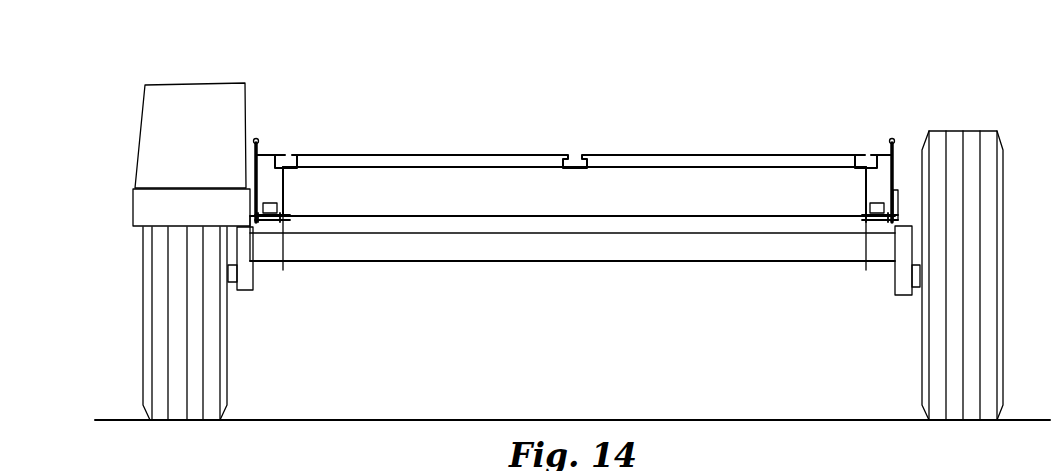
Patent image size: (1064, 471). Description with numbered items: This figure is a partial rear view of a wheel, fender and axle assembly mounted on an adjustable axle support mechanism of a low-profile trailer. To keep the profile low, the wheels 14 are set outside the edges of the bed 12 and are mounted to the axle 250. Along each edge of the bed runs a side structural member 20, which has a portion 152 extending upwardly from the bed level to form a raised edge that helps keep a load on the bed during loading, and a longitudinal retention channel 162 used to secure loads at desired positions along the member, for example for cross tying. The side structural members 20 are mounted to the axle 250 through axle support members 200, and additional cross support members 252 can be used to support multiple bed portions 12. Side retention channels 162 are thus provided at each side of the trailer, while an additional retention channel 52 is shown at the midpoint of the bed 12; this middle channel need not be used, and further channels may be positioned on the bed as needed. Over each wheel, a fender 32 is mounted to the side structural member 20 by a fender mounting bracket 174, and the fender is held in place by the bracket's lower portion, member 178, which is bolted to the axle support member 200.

The bed 12 is at (453, 155).
The wheels 14 is at (145, 315).
The side structural member 20 is at (287, 148).
The fender 32 is at (196, 83).
The retention channel 52 is at (580, 155).
The portion 152 is at (276, 150).
The retention channel 162 is at (287, 153).
The fender bracket 174 is at (256, 150).
The lower portion 178 is at (280, 217).
The axle support members 200 is at (270, 222).
The axle 250 is at (463, 261).
The cross support members 252 is at (688, 216).